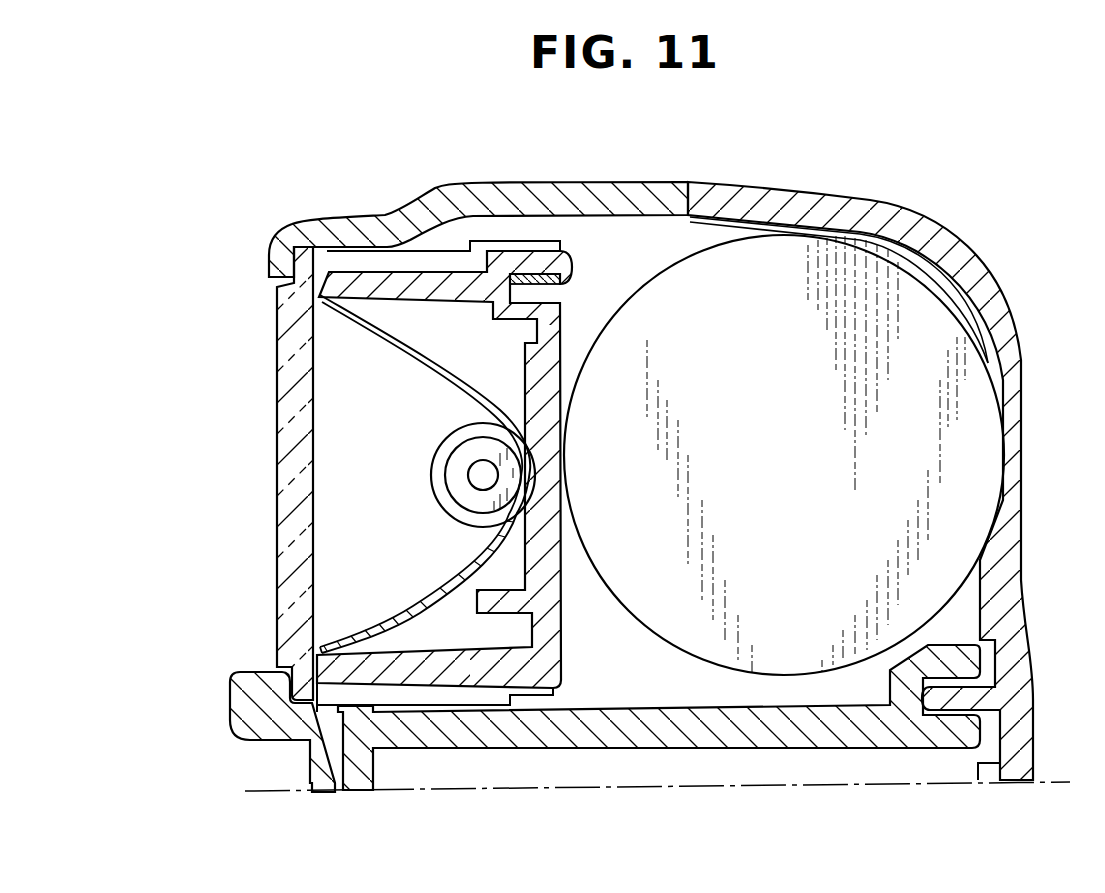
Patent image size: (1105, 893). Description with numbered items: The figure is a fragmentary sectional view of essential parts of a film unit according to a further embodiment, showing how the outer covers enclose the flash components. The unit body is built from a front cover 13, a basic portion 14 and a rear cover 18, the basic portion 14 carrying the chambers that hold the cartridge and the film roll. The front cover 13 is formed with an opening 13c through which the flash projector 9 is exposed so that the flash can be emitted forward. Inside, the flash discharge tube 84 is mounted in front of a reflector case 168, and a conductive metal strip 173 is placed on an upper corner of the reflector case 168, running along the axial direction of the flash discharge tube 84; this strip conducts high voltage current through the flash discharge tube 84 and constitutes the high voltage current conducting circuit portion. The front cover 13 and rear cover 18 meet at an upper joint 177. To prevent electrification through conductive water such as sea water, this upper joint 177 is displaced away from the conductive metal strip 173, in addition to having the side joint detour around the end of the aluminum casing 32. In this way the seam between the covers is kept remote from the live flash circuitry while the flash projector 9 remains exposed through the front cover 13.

The flash projector 9 is at (249, 472).
The front cover 13 is at (477, 183).
The opening 13c is at (247, 672).
The basic portion 14 is at (577, 737).
The rear cover 18 is at (866, 200).
The aluminum casing 32 is at (953, 397).
The flash discharge tube 84 is at (452, 477).
The reflector case 168 is at (560, 637).
The conductive metal strip 173 is at (572, 280).
The upper joint 177 is at (677, 216).